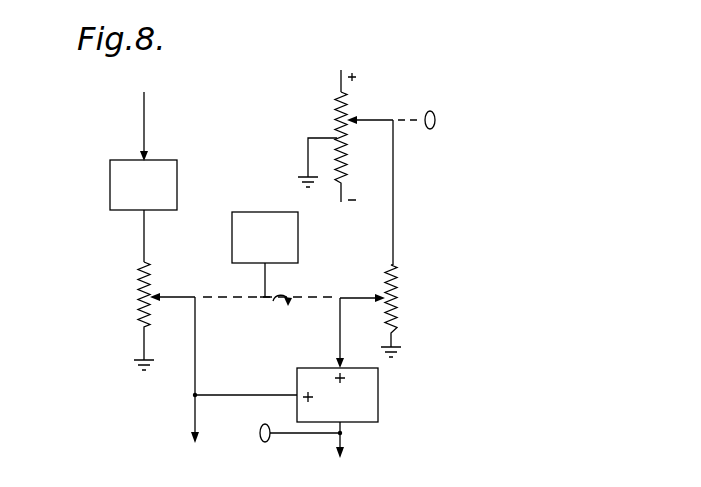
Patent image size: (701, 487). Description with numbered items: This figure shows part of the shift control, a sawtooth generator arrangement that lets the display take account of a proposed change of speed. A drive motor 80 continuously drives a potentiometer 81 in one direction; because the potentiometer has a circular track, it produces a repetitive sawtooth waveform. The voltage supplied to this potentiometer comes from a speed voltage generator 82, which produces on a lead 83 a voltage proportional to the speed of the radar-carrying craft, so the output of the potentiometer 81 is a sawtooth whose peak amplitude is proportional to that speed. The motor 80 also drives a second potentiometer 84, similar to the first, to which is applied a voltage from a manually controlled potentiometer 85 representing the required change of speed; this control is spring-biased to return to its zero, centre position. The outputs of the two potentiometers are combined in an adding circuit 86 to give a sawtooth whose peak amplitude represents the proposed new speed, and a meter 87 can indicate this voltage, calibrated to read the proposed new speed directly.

The drive motor 80 is at (232, 243).
The potentiometer 81 is at (137, 285).
The speed voltage generator 82 is at (110, 185).
The lead 83 is at (143, 128).
The second potentiometer 84 is at (385, 288).
The manually controlled potentiometer 85 is at (336, 113).
The adding circuit 86 is at (315, 368).
The meter 87 is at (259, 433).